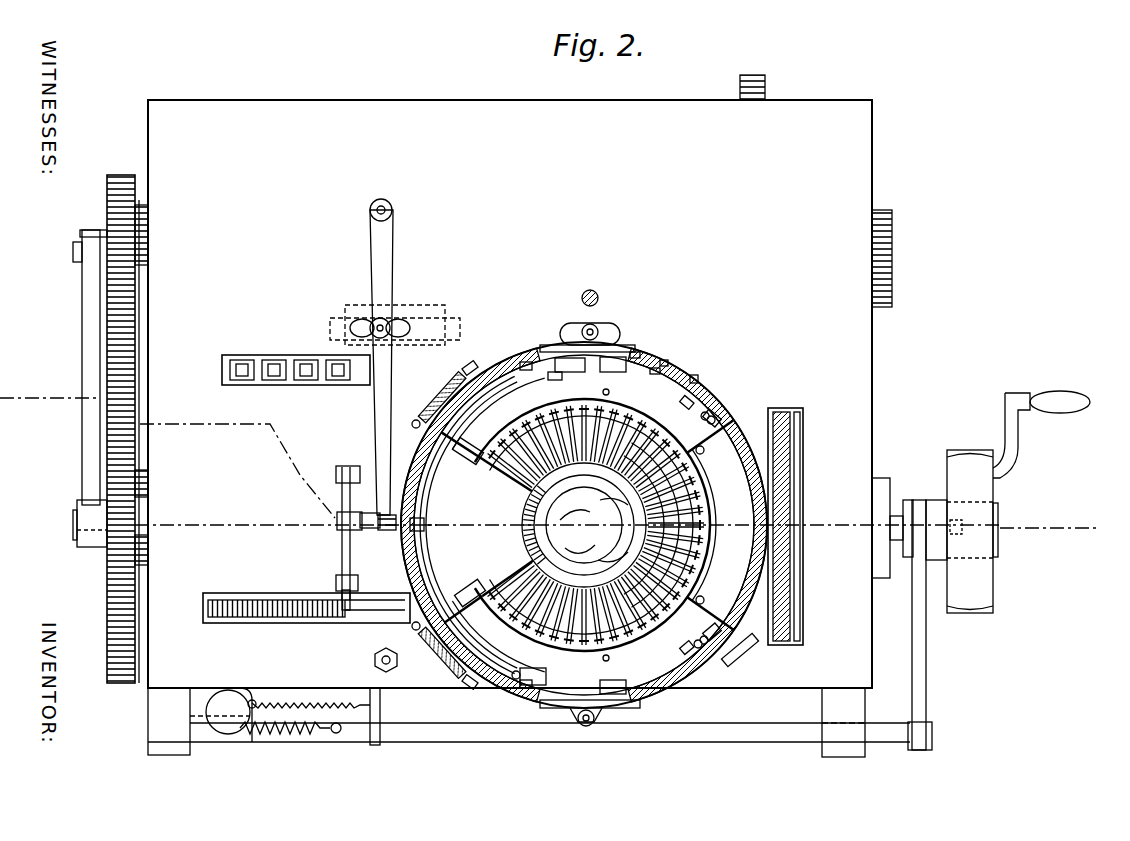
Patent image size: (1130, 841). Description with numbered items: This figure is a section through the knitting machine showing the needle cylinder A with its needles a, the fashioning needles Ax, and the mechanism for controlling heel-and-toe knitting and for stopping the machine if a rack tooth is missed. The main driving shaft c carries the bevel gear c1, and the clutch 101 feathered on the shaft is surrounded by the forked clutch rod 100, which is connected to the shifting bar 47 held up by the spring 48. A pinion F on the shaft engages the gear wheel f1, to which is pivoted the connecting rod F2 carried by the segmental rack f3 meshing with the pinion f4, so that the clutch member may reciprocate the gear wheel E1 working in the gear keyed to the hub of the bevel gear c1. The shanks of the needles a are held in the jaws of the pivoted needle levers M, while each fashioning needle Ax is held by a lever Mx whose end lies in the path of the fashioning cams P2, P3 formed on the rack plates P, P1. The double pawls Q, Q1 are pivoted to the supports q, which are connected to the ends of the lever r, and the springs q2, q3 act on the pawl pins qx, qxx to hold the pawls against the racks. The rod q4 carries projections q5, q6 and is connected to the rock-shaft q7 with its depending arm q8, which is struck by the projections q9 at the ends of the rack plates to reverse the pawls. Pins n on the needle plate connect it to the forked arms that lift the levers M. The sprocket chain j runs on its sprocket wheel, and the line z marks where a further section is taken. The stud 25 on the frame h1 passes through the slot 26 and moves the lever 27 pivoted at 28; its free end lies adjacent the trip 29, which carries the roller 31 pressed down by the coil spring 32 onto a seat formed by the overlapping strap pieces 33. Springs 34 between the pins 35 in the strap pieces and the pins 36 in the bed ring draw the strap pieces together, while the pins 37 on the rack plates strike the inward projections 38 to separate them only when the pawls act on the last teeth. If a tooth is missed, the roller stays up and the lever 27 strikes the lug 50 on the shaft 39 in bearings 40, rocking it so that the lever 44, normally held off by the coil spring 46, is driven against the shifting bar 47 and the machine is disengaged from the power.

The gear wheel E1 is at (766, 92).
The segmental rack f3 is at (113, 178).
The gear wheel f1 is at (112, 645).
The connecting rod F2 is at (88, 368).
The pinion f4 is at (105, 218).
The pinion F is at (108, 555).
The stud 25 is at (352, 325).
The slot 26 is at (386, 322).
The lever 27 is at (378, 440).
The pivot 28 is at (392, 208).
The frame h1 is at (445, 322).
The shaft 39 is at (340, 548).
The bearings 40 is at (336, 472).
The lug 50 is at (336, 522).
The trip 29 is at (370, 530).
The coil spring 32 is at (390, 513).
The roller 31 is at (418, 531).
The sprocket chain j is at (240, 620).
The lever 44 is at (382, 706).
The shifting bar 47 is at (470, 730).
The coil spring 46 is at (350, 703).
The spring 48 is at (285, 735).
The forked clutch rod 100 is at (926, 686).
The clutch 101 is at (930, 500).
The main driving shaft c is at (965, 450).
The section line z— z is at (1056, 529).
The bevel gear c1 is at (800, 430).
The support q is at (500, 725).
The strap metallic pieces 33 is at (470, 398).
The springs 34 is at (434, 388).
The pin 35 is at (472, 362).
The pin 36 is at (412, 422).
The pin 37 is at (520, 668).
The inward projection 38 is at (548, 345).
The pawl pin qx is at (596, 292).
The spring q2 is at (560, 358).
The projection q5 is at (556, 372).
The double pawl Q is at (615, 357).
The double pawl Q1 is at (612, 694).
The pawl pin qxx is at (635, 352).
The projection q6 is at (655, 368).
The spring q3 is at (664, 360).
The rod q4 is at (695, 375).
The rock-shaft q7 is at (680, 405).
The depending arm q8 is at (704, 418).
The projections q9 is at (730, 672).
The pins n is at (706, 530).
The needle levers M is at (480, 448).
The pivoted lever Mx is at (516, 526).
The lever r is at (705, 505).
The rack plate P is at (728, 424).
The rack plate P1 is at (750, 655).
The fashioning needle operating cam P2 is at (458, 450).
The fashioning needle operating cam P3 is at (462, 600).
The needle cylinder A is at (578, 525).
The fashioning needles Ax is at (577, 533).
The needles a is at (613, 524).